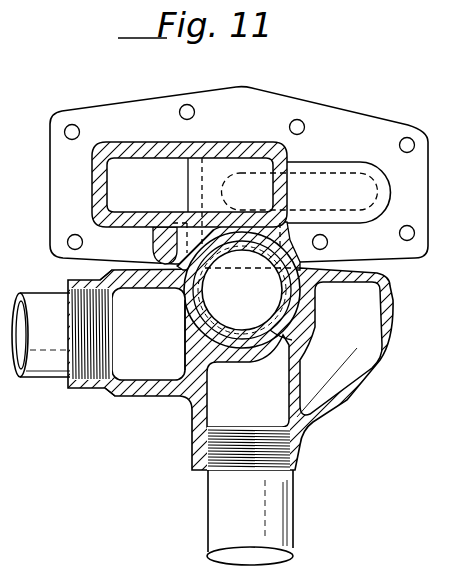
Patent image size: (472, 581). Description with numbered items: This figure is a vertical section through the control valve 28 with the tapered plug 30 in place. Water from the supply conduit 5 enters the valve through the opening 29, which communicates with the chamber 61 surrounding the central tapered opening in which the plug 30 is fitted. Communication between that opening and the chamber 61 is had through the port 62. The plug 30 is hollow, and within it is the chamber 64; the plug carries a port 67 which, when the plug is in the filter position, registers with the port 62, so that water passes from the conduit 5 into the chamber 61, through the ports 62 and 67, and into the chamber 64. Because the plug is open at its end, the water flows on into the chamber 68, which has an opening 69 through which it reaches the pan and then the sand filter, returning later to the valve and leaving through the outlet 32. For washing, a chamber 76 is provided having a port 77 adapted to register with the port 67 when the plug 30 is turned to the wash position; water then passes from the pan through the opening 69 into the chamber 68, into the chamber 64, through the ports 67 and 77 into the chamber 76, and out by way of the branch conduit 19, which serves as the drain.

The conduit 5 is at (45, 368).
The branch conduit 19 is at (218, 514).
The control valve 28 is at (393, 302).
The opening 29 is at (100, 307).
The tapered plug 30 is at (236, 250).
The outlet 32 is at (120, 167).
The chamber 61 is at (148, 334).
The port 62 is at (180, 310).
The chamber 64 is at (253, 330).
The port 67 is at (282, 322).
The chamber 68 is at (241, 177).
The opening 69 is at (357, 177).
The chamber 76 is at (357, 350).
The port 77 is at (307, 310).